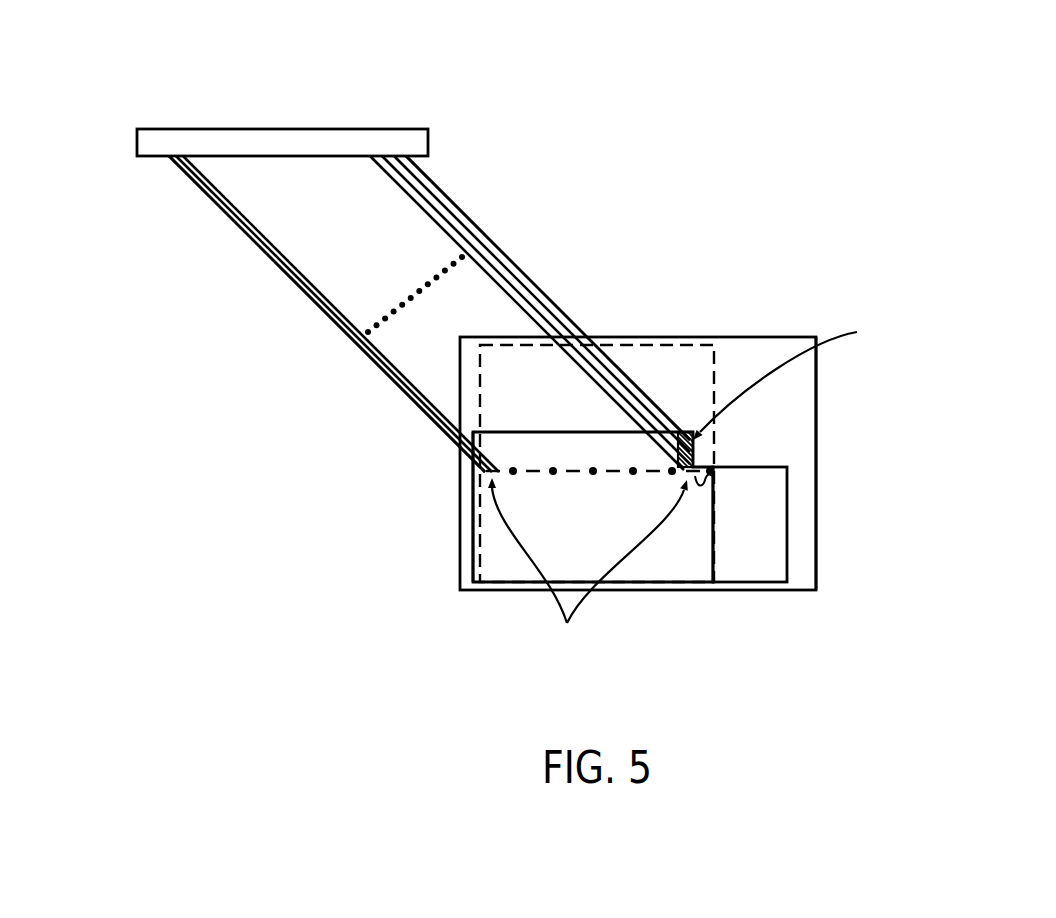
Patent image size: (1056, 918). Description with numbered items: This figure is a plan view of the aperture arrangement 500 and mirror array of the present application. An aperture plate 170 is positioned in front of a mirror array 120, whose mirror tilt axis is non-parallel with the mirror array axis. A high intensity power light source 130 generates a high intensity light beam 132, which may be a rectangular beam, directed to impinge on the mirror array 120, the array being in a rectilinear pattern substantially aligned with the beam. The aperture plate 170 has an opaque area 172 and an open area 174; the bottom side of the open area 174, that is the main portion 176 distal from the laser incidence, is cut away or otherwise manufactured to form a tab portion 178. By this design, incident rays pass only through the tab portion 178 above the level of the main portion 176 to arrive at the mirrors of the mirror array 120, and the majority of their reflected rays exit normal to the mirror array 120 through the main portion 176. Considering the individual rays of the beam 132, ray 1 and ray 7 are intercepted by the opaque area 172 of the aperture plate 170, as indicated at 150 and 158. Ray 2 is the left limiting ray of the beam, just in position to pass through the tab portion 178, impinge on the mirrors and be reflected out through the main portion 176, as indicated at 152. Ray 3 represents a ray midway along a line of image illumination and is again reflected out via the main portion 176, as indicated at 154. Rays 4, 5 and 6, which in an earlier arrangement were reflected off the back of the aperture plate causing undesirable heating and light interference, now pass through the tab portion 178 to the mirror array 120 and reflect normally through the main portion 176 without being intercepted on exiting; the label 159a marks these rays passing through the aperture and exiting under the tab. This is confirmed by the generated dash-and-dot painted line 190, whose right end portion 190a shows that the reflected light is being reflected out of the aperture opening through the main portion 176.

The optical system 500 is at (952, 104).
The high intensity power light source 130 is at (290, 127).
The high intensity light beam 132 is at (217, 207).
The ray 1 is at (278, 272).
The left limiting ray 2 is at (317, 288).
The ray 3 is at (512, 297).
The ray 4 is at (482, 255).
The ray 5 is at (500, 267).
The ray 6 is at (512, 265).
The ray 7 is at (632, 380).
The mirror array 120 is at (698, 337).
The ray intercepted by aperture 150 is at (440, 443).
The rays passing through aperture 152 is at (515, 538).
The ray passing through aperture 154 is at (637, 548).
The ray intercepted by aperture 158 is at (700, 433).
The rays passing through aperture and exiting under tab 159a is at (851, 390).
The aperture plate 170 is at (767, 337).
The opaque area 172 is at (790, 355).
The open area 174 is at (461, 494).
The main portion 176 is at (777, 523).
The tab portion 178 is at (532, 443).
The painted line 190 is at (593, 477).
The right end portion of line 190a is at (702, 485).